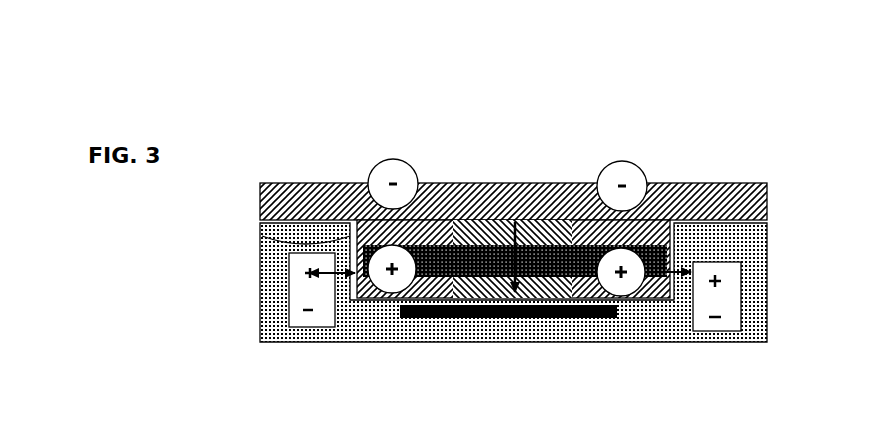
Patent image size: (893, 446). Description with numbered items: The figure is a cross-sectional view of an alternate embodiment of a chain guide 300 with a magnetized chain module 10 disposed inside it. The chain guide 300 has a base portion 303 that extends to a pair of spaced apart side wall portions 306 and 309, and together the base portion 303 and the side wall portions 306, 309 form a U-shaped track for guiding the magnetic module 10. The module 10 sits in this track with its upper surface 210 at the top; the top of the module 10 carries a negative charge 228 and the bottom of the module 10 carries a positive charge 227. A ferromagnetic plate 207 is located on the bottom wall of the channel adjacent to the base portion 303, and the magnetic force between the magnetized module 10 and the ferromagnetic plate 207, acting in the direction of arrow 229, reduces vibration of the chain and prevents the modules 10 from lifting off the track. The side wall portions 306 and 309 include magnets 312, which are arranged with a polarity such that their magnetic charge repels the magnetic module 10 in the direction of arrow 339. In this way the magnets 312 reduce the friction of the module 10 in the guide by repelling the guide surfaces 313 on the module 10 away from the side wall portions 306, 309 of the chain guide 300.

The chain guide 300 is at (516, 229).
The chain module 10 is at (550, 209).
The upper surface 210 is at (317, 183).
The arrow 229 is at (510, 220).
The negative charge 228 is at (634, 164).
The positive charge 227 is at (650, 291).
The ferromagnetic plate 207 is at (458, 318).
The side wall portion 306 is at (260, 250).
The side wall portion 309 is at (757, 243).
The base portion 303 is at (655, 300).
The magnets 312 is at (297, 295).
The guide surfaces 313 is at (262, 237).
The arrow 339 is at (344, 281).